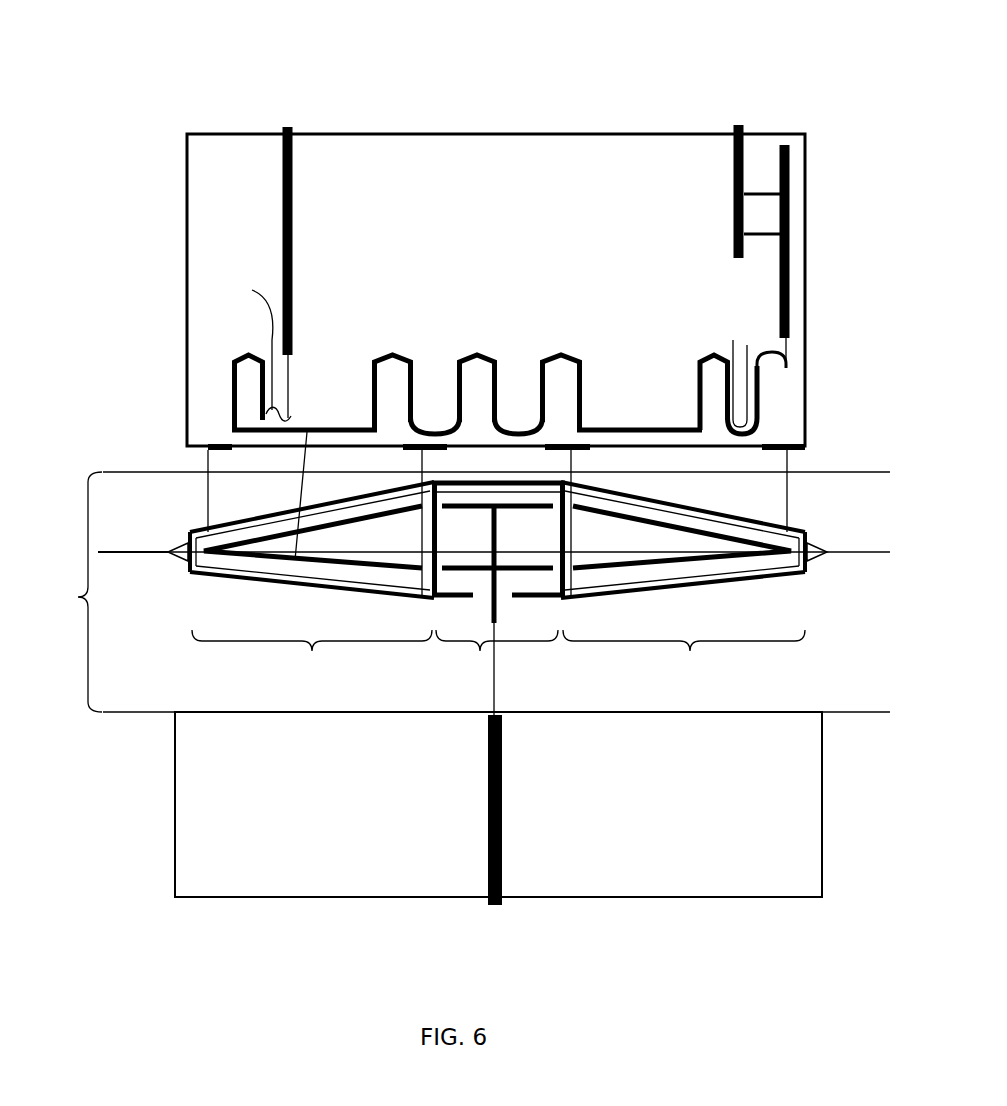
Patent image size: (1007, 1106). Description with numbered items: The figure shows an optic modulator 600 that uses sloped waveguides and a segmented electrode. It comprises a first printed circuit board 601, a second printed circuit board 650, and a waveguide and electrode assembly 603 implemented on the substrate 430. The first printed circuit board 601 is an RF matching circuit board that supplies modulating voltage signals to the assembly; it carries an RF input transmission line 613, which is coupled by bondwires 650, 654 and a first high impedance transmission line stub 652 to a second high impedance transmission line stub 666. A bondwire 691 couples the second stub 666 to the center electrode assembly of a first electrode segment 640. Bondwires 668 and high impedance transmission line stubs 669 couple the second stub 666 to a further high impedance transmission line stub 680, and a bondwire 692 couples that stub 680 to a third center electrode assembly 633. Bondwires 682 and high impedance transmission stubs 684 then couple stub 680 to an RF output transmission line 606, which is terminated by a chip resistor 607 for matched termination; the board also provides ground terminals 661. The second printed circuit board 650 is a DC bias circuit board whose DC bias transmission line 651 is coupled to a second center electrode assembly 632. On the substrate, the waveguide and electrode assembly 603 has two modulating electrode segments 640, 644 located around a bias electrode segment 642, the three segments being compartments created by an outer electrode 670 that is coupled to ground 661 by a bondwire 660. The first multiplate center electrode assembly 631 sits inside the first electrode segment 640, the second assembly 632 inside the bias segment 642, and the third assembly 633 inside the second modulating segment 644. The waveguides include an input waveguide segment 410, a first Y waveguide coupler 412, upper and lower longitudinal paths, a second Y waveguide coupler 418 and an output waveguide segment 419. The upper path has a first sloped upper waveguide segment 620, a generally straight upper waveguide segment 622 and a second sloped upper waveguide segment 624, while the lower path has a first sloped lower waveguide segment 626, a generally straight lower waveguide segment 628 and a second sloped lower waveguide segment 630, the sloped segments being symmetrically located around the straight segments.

The optic modulator 600 is at (130, 118).
The first printed circuit board 601 is at (560, 153).
The RF input transmission line 613 is at (293, 215).
The chip resistor 607 is at (773, 218).
The RF output transmission line 606 is at (779, 296).
The bond wire 654 is at (250, 355).
The first high impedance transmission line stub 652 is at (251, 337).
The second printed circuit board 650 is at (291, 416).
The second high impedance transmission line stub 666 is at (372, 376).
The bond wires 668 is at (482, 348).
The high impedance transmission line stubs 669 is at (545, 360).
The bondwire 692 is at (639, 422).
The high impedance transmission line stub 680 is at (682, 392).
The high impedance transmission stubs 684 is at (753, 418).
The bond wires 682 is at (763, 355).
The ground terminals 661 is at (220, 444).
The bondwire 691 is at (304, 461).
The waveguide and electrode assembly 603 is at (460, 592).
The output waveguide segment 419 is at (874, 553).
The second Y waveguide coupler 418 is at (827, 548).
The input waveguide segment 410 is at (120, 558).
The first Y waveguide coupler 412 is at (162, 560).
The bondwire 660 is at (200, 490).
The first sloped upper waveguide segment 620 is at (229, 530).
The first sloped lower waveguide segment 626 is at (242, 568).
The first multiplate center electrode assembly 631 is at (352, 558).
The substrate 430 is at (838, 492).
The second sloped upper waveguide segment 624 is at (724, 522).
The second sloped lower waveguide segment 630 is at (652, 568).
The third multiplate center electrode assembly 633 is at (584, 558).
The outer electrode 670 is at (779, 572).
The generally straight upper waveguide segment 622 is at (518, 495).
The generally straight lower waveguide segment 628 is at (452, 597).
The second multiplate center electrode assembly 632 is at (490, 558).
The first modulating electrode segment 640 is at (312, 660).
The bias electrode segment 642 is at (497, 660).
The second modulating electrode segment 644 is at (684, 660).
The DC bias transmission line 651 is at (502, 815).